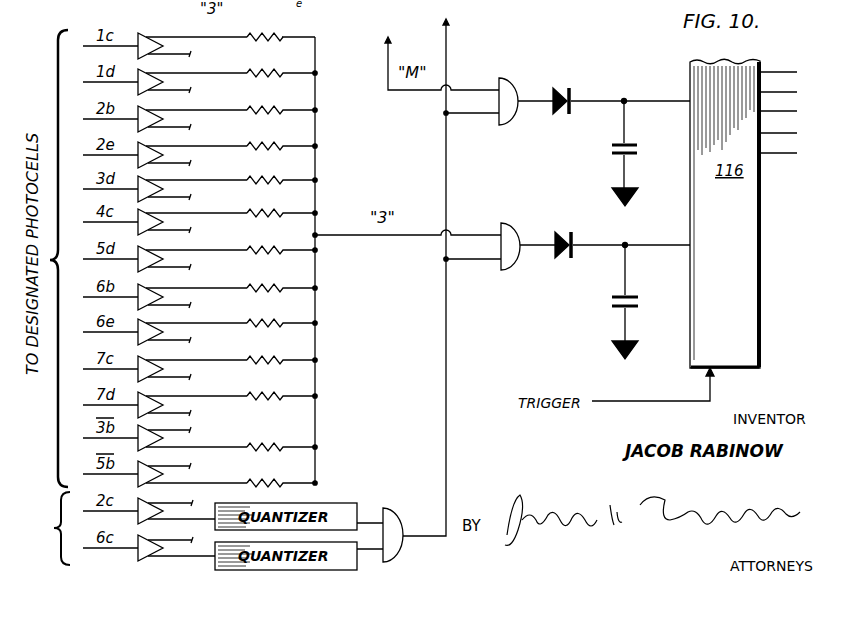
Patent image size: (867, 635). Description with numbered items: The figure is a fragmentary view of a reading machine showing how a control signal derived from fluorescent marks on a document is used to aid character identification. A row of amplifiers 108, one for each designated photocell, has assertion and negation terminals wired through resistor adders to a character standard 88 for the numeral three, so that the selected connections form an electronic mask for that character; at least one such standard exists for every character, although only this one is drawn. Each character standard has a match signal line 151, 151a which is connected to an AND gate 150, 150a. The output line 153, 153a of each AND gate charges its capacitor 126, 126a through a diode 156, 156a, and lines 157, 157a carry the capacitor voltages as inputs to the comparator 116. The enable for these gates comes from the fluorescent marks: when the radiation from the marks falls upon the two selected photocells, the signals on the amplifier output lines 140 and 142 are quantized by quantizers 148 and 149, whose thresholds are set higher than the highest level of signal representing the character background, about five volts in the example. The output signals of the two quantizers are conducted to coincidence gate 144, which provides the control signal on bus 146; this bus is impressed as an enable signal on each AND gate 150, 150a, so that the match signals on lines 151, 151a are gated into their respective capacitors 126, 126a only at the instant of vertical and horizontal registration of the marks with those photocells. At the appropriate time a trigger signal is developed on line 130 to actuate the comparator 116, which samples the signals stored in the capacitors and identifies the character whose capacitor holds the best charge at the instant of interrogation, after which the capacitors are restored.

The amplifiers 108 is at (142, 31).
The character standard 88 is at (252, 33).
The match signal line 151a is at (407, 95).
The match signal line 151 is at (392, 240).
The AND gate 150a is at (511, 71).
The AND gate 150 is at (509, 219).
The output line 153a is at (548, 106).
The output line 153 is at (538, 248).
The diode 156a is at (562, 86).
The diode 156 is at (556, 232).
The line 157a is at (640, 99).
The line 157 is at (651, 243).
The capacitor 126a is at (612, 154).
The capacitor 126 is at (612, 308).
The comparator 116 is at (743, 213).
The control signal line 146 is at (446, 428).
The quantizer 148 is at (306, 504).
The quantizer 149 is at (357, 567).
The coincidence gate 144 is at (389, 510).
The amplifier output line 140 is at (199, 514).
The amplifier output line 142 is at (207, 557).
The trigger signal line 130 is at (618, 401).